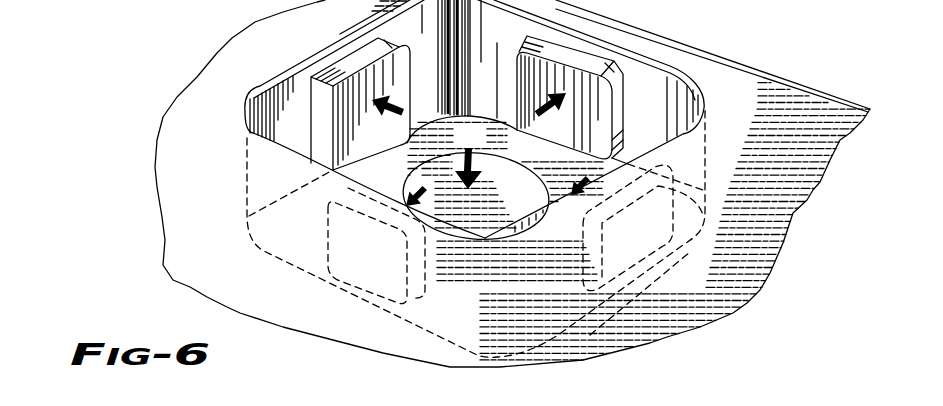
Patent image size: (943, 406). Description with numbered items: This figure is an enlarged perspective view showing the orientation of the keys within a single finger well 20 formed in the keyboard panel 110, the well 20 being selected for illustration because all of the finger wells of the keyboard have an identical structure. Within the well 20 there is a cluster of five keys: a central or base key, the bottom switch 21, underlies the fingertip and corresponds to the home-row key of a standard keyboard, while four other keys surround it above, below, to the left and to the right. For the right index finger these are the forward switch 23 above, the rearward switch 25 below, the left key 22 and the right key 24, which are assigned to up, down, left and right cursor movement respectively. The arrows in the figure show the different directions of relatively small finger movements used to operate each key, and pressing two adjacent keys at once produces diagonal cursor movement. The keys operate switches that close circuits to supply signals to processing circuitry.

The panel / plate 110 is at (846, 80).
The finger well 20 is at (706, 104).
The bottom switch 21 is at (483, 158).
The left key 22 is at (366, 78).
The forward switch 23 is at (607, 106).
The right key 24 is at (665, 246).
The rearward switch 25 is at (378, 280).